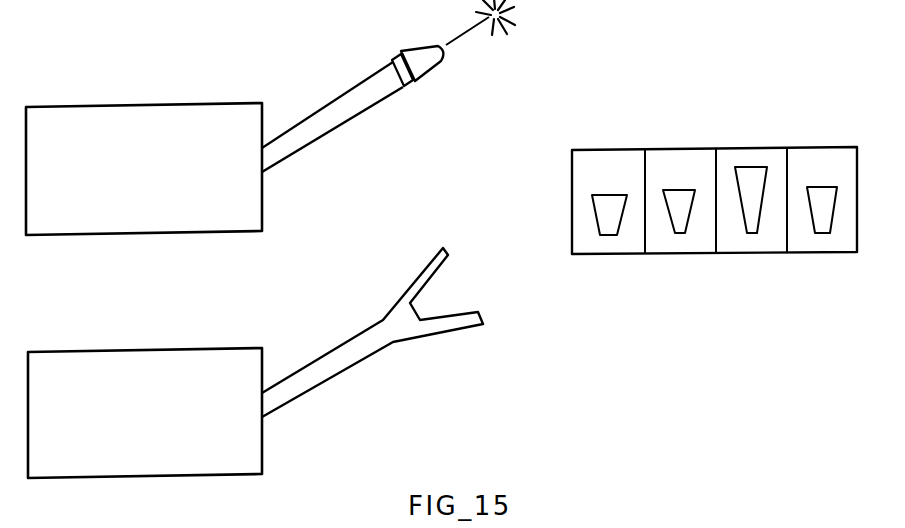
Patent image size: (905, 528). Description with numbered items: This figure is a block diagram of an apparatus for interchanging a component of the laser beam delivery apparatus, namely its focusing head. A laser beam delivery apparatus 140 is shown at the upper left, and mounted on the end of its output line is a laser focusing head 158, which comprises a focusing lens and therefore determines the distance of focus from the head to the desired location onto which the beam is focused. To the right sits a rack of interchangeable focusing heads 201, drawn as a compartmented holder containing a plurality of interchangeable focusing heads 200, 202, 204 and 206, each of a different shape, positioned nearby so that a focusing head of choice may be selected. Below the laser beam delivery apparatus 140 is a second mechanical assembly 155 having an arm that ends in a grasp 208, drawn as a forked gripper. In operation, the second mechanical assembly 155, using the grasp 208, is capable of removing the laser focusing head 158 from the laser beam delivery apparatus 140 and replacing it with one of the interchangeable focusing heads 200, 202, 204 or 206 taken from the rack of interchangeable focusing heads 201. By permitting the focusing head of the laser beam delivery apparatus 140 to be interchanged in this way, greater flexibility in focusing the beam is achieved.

The laser beam delivery apparatus 140 is at (157, 188).
The second mechanical assembly 155 is at (158, 428).
The laser focusing head 158 is at (419, 82).
The grasp 208 is at (443, 285).
The rack of interchangeable focusing heads 201 is at (572, 169).
The interchangeable focusing head 200 is at (608, 236).
The interchangeable focusing head 202 is at (680, 234).
The interchangeable focusing head 204 is at (750, 234).
The interchangeable focusing head 206 is at (820, 234).